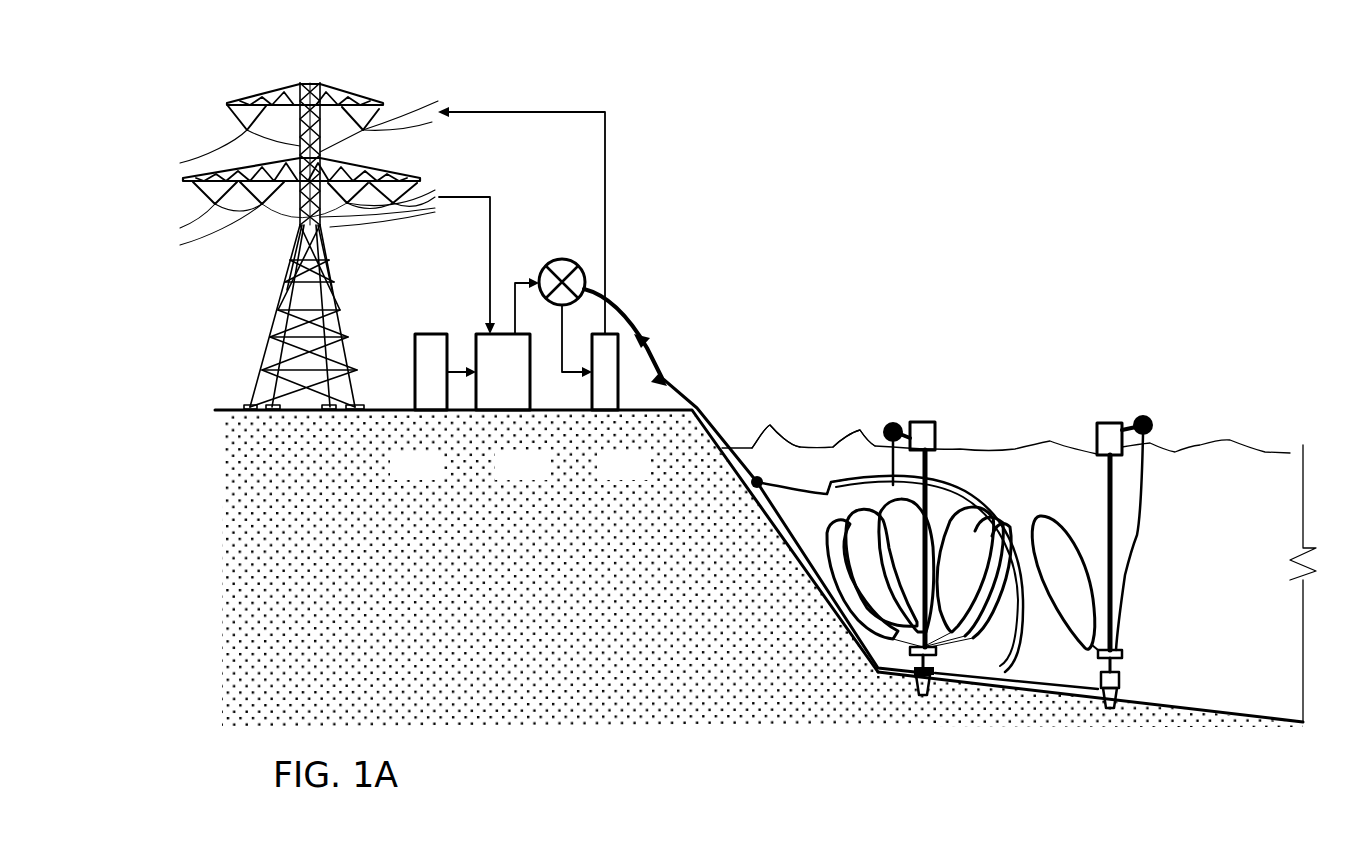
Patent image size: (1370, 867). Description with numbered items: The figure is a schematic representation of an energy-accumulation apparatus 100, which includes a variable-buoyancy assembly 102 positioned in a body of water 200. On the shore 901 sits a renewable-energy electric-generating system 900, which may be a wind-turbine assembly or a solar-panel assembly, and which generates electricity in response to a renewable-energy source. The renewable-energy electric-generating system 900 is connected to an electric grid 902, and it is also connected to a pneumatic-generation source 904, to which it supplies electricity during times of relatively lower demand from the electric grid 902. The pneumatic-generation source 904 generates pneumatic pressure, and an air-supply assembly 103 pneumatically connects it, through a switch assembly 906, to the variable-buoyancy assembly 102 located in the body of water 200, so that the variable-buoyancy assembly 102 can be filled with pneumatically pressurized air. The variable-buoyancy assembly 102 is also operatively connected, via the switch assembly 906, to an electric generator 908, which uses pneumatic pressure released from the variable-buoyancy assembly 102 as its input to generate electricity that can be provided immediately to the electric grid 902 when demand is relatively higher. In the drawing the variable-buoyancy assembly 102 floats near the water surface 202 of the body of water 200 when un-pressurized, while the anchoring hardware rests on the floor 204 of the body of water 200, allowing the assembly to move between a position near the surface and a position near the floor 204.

The energy-accumulation apparatus 100 is at (930, 416).
The variable-buoyancy assembly 102 is at (1060, 551).
The air-supply assembly 103 is at (634, 328).
The body of water 200 is at (1178, 459).
The water surface 202 is at (837, 448).
The floor 204 is at (1147, 704).
The renewable-energy electric-generating system 900 is at (427, 414).
The shore 901 is at (678, 398).
The electric grid 902 is at (337, 309).
The pneumatic-generation source 904 is at (517, 414).
The switch assembly 906 is at (557, 258).
The electric generator 908 is at (615, 414).